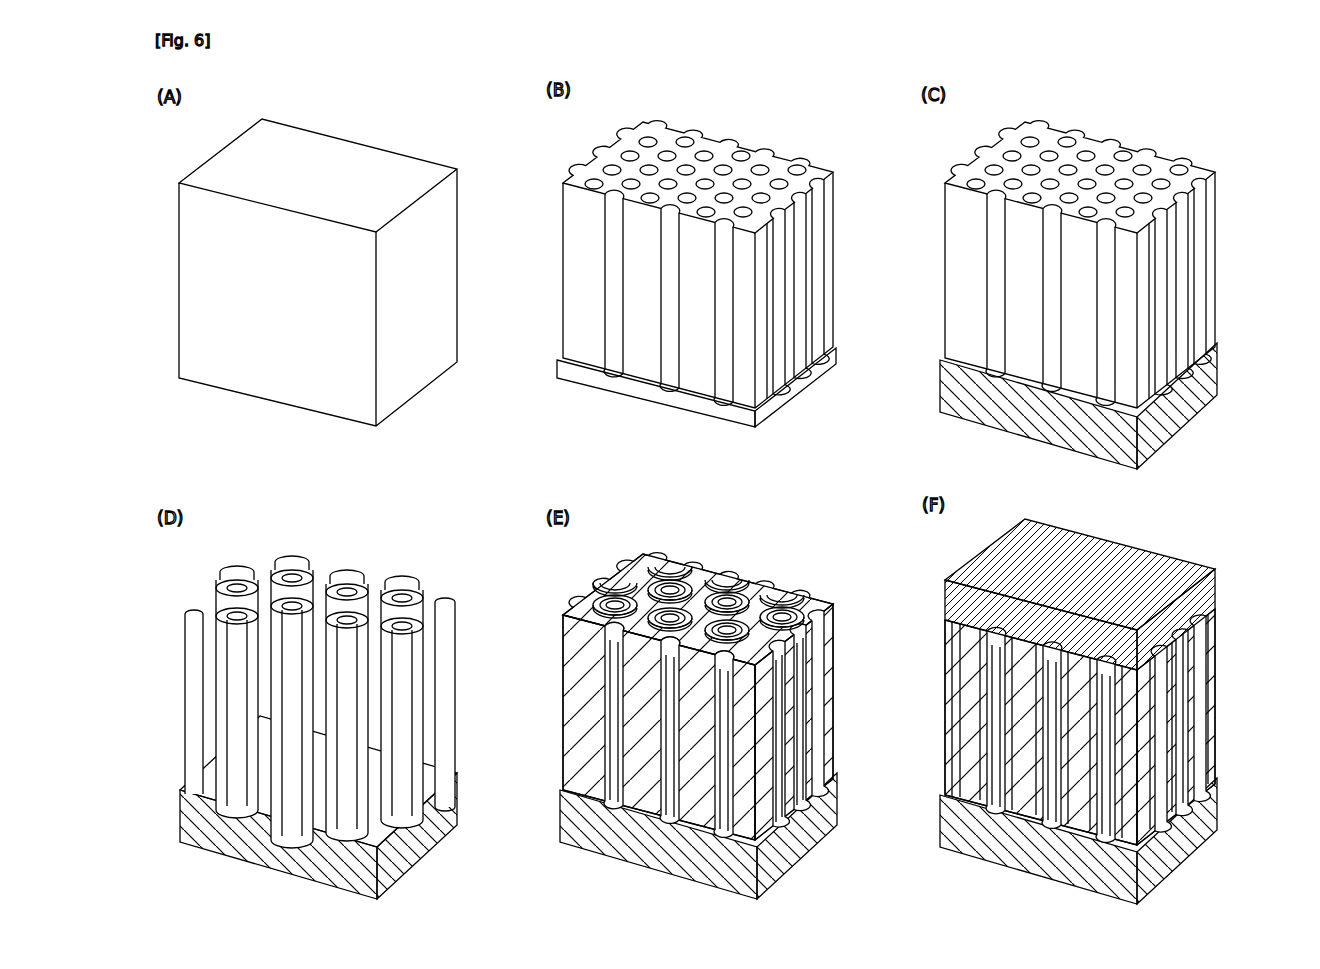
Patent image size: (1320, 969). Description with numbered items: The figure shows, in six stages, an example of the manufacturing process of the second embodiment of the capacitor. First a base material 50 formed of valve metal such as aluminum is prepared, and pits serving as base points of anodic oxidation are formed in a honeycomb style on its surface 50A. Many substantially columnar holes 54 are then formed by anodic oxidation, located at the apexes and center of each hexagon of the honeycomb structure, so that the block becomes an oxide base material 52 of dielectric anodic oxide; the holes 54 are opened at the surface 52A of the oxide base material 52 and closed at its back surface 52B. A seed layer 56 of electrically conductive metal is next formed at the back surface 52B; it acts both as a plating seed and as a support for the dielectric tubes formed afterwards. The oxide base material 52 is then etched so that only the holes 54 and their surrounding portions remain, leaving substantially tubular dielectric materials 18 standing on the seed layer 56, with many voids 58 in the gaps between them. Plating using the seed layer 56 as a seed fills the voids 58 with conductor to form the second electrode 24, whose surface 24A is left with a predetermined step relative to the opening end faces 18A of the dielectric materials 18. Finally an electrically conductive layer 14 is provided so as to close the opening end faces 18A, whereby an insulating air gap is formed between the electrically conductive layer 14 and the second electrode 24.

The electrically conductive layer 14 is at (1088, 532).
The tubular dielectric material 18 is at (283, 562).
The opening end face 18A is at (780, 590).
The second electrode 24 is at (813, 647).
The surface of the second electrode 24A is at (805, 603).
The base material 50 is at (358, 143).
The surface of the base material 50A is at (415, 175).
The oxide base material 52 is at (698, 136).
The surface of the oxide base material 52A is at (817, 160).
The back surface of the oxide base material 52B is at (673, 416).
The hole 54 is at (650, 138).
The seed layer 56 is at (942, 410).
The void 58 is at (430, 693).